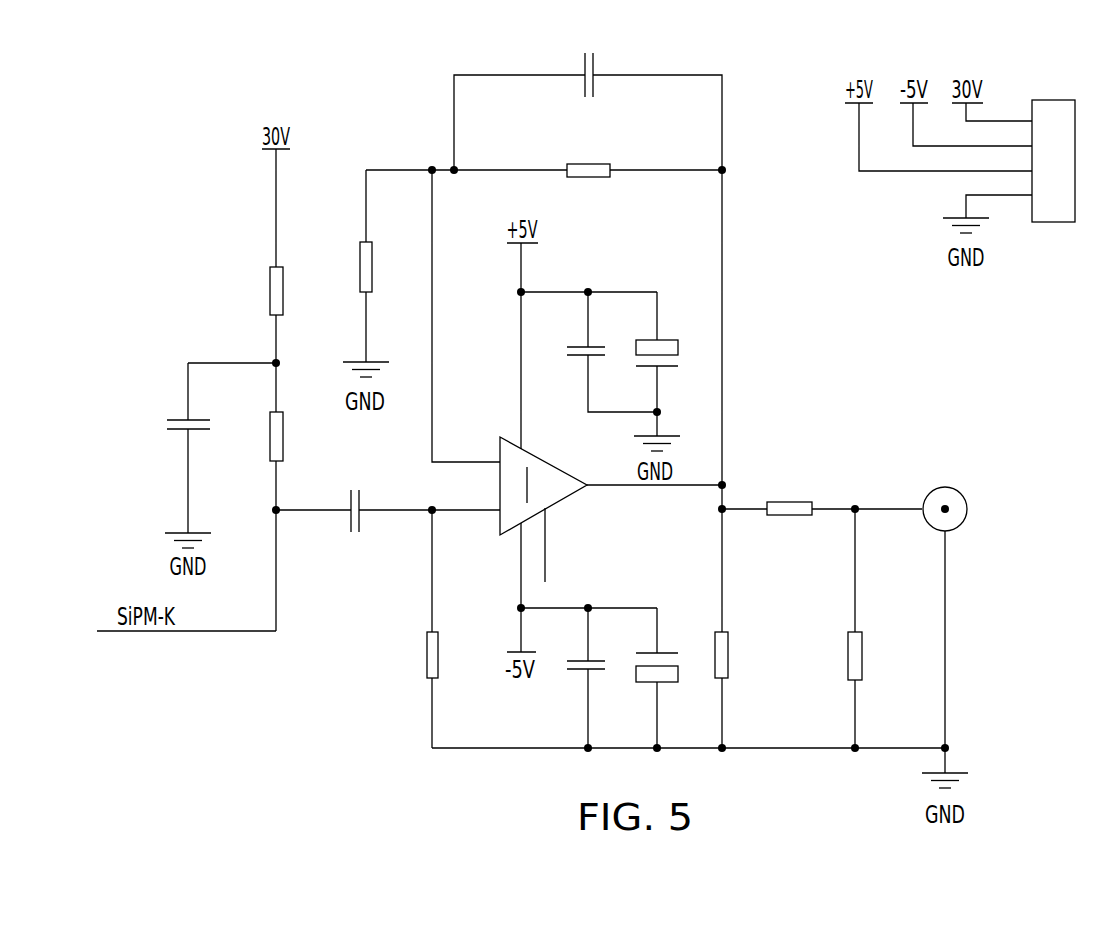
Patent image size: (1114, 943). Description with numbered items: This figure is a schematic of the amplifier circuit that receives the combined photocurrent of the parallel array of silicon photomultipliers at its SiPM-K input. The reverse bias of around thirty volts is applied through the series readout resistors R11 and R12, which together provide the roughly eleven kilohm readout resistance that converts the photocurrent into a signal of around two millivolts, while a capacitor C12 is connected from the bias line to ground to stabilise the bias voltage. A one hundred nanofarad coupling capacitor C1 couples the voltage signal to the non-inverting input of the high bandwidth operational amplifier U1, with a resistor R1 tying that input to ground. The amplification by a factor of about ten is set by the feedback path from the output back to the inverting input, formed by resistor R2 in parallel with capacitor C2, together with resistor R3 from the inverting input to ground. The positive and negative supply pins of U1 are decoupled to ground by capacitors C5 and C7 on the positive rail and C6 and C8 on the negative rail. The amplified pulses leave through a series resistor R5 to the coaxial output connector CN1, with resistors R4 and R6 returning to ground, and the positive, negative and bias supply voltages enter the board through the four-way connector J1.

The resistor 47R R1 is at (439, 654).
The feedback resistor 470R R2 is at (588, 173).
The resistor 47R R3 is at (369, 267).
The resistor TBA R4 is at (743, 658).
The series output resistor 0R R5 is at (787, 512).
The resistor TBA R6 is at (877, 657).
The bias resistor 10K R11 is at (276, 295).
The bias resistor 1K R12 is at (279, 431).
The coupling capacitor 100nF C1 is at (357, 513).
The feedback capacitor TBA C2 is at (588, 78).
The decoupling capacitor 100nF C5 is at (599, 350).
The decoupling capacitor 100nF C6 is at (598, 666).
The electrolytic capacitor 6.8uF C7 is at (672, 376).
The electrolytic capacitor 6.8uF C8 is at (671, 686).
The bias filter capacitor 10nF C12 is at (194, 439).
The operational amplifier OPA695IDBVT U1 is at (562, 466).
The MMT coax connector CN1 is at (975, 509).
The HARWIN M40 4-way connector J1 is at (1071, 161).